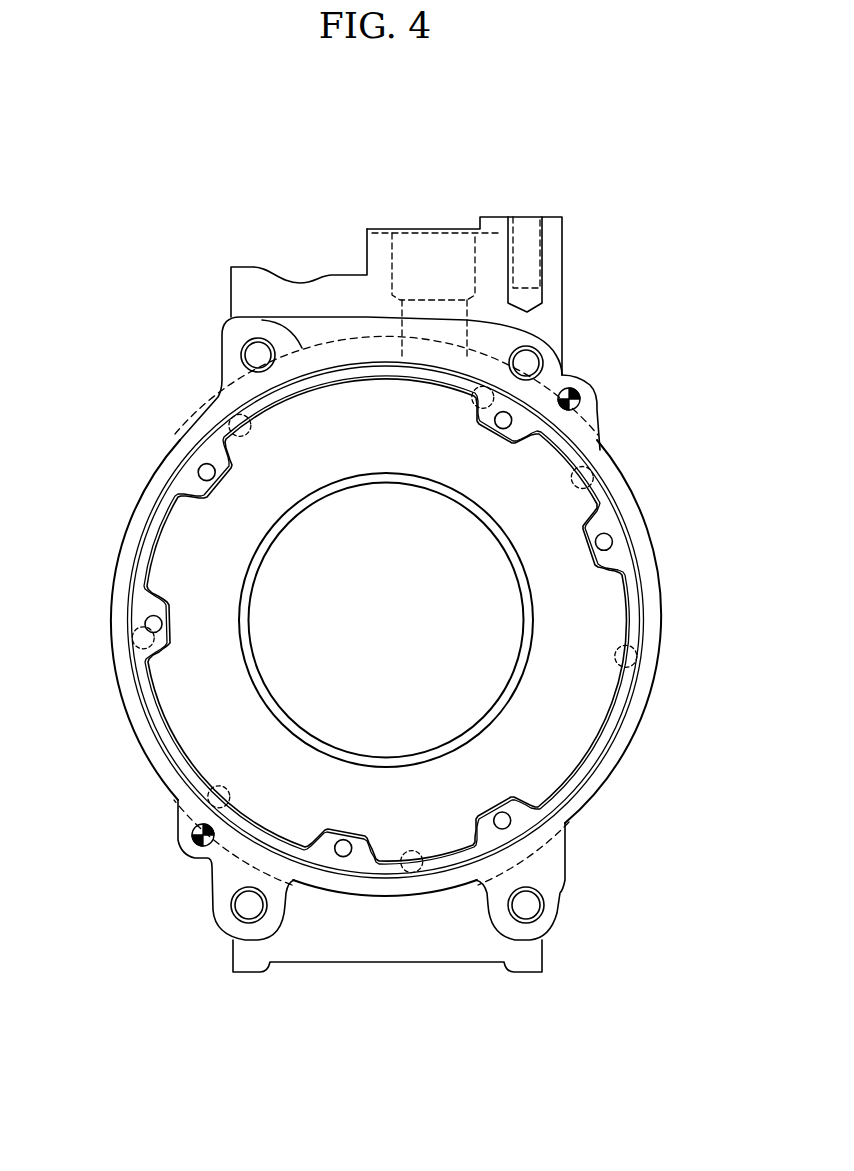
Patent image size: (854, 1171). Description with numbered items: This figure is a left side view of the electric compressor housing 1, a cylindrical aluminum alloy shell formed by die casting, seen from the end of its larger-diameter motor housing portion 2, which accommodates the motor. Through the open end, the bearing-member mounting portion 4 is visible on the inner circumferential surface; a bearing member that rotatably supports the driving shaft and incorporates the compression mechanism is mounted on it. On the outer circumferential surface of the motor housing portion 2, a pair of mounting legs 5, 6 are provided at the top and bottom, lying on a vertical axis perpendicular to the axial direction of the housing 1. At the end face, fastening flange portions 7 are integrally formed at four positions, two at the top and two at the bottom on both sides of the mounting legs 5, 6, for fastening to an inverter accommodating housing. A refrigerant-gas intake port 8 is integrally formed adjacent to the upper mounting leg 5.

The electric compressor housing 1 is at (660, 563).
The motor housing portion 2 is at (148, 733).
The bearing-member mounting portion 4 is at (585, 715).
The mounting leg 5 is at (312, 302).
The mounting leg 6 is at (387, 937).
The fastening flange portions 7 is at (233, 347).
The refrigerant-gas intake port 8 is at (436, 253).